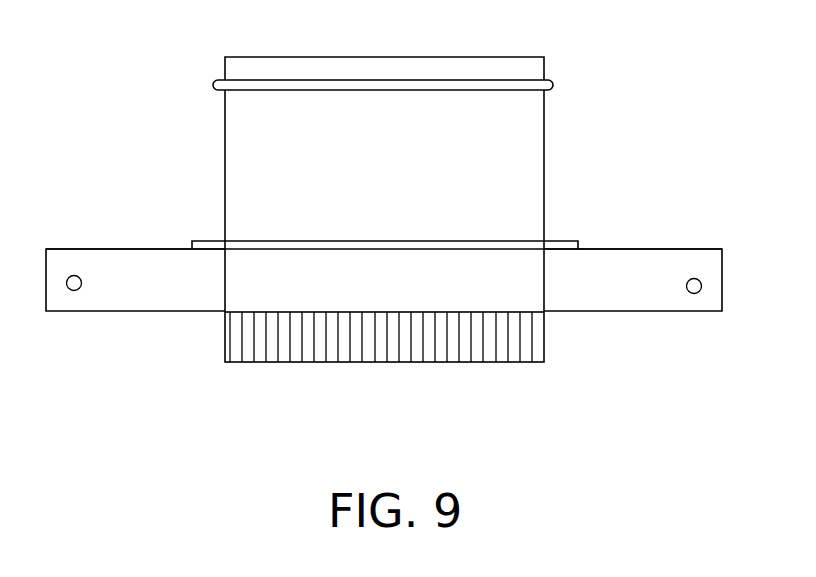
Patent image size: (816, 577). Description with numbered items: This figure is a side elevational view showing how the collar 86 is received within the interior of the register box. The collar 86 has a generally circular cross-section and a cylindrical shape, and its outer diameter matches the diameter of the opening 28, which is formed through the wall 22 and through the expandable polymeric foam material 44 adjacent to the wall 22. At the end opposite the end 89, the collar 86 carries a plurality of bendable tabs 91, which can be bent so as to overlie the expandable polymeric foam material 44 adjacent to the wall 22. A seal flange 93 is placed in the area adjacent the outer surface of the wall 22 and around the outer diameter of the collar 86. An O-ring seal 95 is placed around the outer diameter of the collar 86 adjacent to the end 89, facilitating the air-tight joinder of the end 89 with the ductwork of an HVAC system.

The wall 22 is at (661, 248).
The opening 28 is at (545, 287).
The expandable polymeric foam material 44 is at (661, 297).
The collar 86 is at (544, 165).
The end 89 is at (525, 57).
The bendable tabs 91 is at (243, 353).
The seal flange 93 is at (562, 238).
The O-ring seal 95 is at (553, 86).